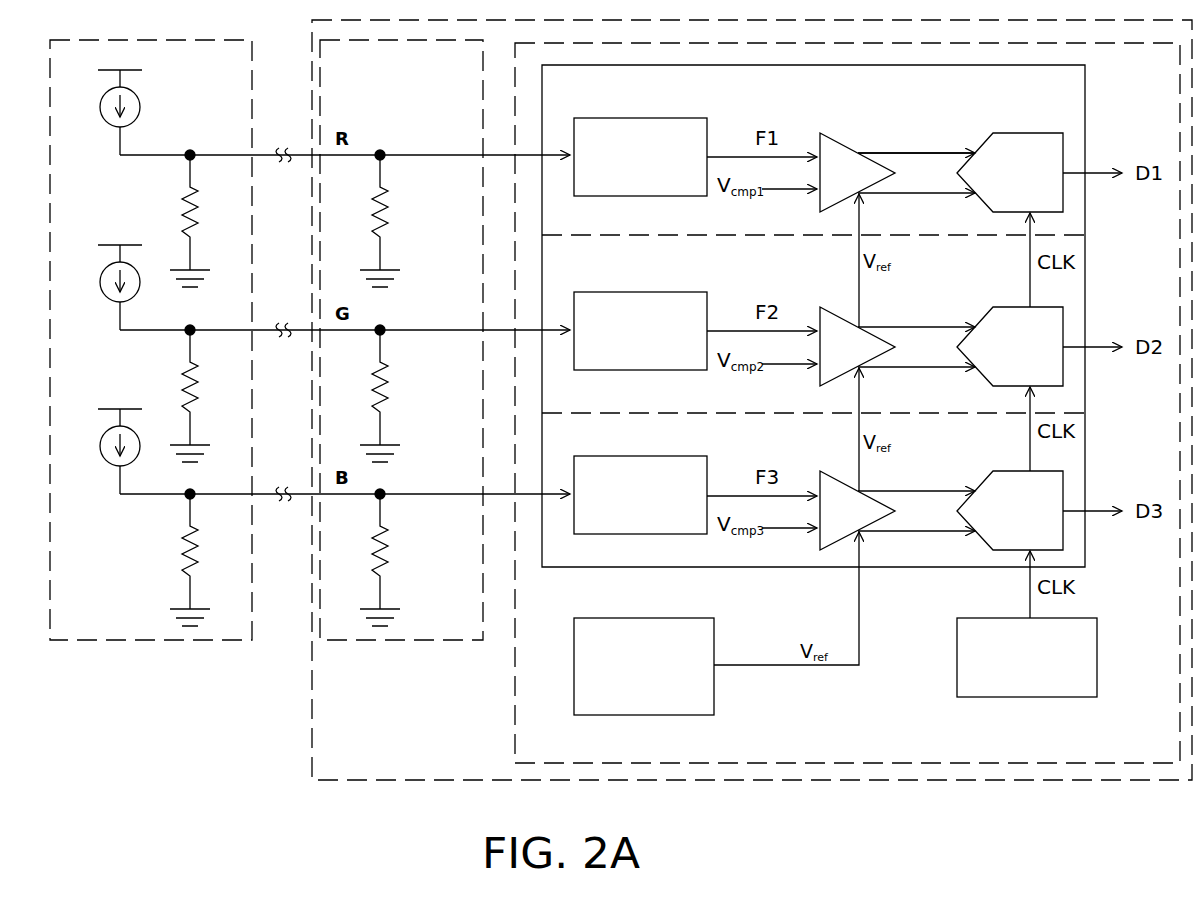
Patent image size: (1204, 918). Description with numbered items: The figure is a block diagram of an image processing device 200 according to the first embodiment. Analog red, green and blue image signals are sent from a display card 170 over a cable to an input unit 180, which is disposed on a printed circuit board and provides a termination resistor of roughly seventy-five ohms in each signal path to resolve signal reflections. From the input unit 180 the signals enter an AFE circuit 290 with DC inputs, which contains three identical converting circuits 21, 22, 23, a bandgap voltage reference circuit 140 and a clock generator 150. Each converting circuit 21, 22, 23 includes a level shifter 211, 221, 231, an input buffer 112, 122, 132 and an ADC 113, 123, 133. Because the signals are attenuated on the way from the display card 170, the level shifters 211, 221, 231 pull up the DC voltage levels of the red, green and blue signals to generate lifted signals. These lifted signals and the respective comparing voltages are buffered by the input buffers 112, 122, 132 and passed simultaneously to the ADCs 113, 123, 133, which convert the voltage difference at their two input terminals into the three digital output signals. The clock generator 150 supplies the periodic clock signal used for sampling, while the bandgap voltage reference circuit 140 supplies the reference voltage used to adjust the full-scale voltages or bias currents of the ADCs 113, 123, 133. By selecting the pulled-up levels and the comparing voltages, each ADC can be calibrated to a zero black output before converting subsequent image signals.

The converting circuit 21 is at (1085, 96).
The converting circuit 22 is at (1085, 287).
The converting circuit 23 is at (1085, 456).
The input buffer 112 is at (820, 133).
The ADC 113 is at (1008, 185).
The input buffer 122 is at (820, 307).
The ADC 123 is at (1008, 359).
The input buffer 132 is at (820, 471).
The ADC 133 is at (1008, 523).
The bandgap voltage reference circuit 140 is at (659, 618).
The clock generator 150 is at (1097, 697).
The display card 170 is at (252, 640).
The input unit 180 is at (483, 640).
The image processing device 200 is at (303, 712).
The level shifter 211 is at (659, 118).
The level shifter 221 is at (659, 292).
The level shifter 231 is at (659, 456).
The AFE circuit with DC inputs 290 is at (513, 748).